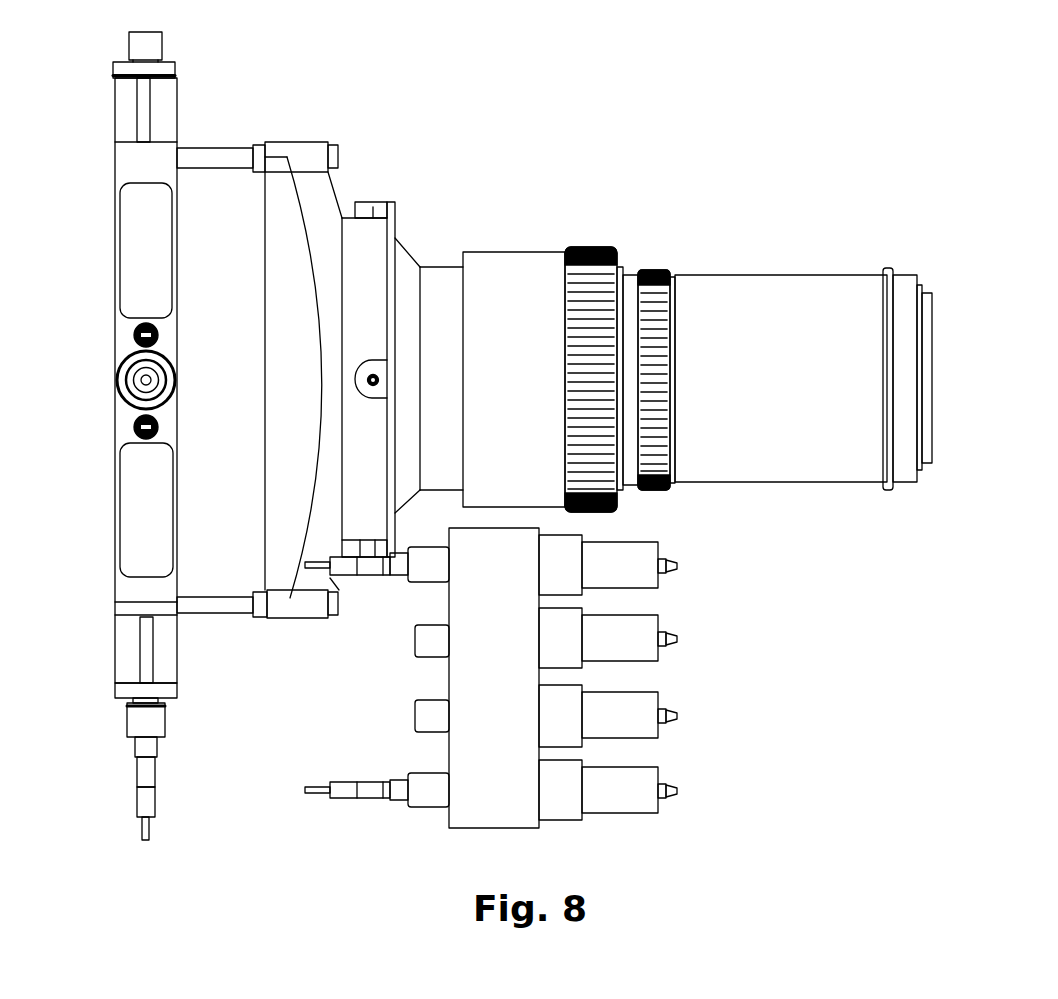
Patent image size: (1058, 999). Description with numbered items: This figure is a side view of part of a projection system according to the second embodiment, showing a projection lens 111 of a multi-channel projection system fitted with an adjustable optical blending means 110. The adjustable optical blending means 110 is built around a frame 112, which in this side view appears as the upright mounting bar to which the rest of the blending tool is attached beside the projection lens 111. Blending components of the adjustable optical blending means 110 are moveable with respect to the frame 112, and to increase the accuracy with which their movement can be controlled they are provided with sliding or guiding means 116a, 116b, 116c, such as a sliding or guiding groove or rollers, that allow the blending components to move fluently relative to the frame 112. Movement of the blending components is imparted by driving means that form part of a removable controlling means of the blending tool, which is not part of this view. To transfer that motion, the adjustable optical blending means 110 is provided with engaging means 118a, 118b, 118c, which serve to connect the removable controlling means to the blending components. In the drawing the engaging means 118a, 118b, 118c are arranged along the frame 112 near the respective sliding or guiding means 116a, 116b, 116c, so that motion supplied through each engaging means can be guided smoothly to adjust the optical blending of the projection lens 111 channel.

The adjustable optical blending means 110 is at (487, 436).
The projection lens 111 is at (585, 208).
The frame 112 is at (115, 533).
The sliding or guiding means 116a is at (147, 115).
The sliding or guiding means 116b is at (135, 340).
The sliding or guiding means 116c is at (147, 652).
The engaging means 118a is at (150, 45).
The engaging means 118b is at (158, 380).
The engaging means 118c is at (147, 802).